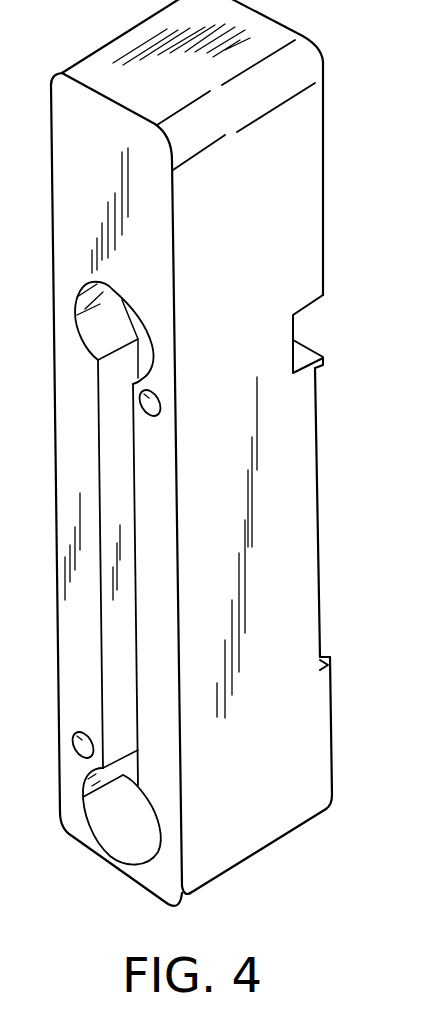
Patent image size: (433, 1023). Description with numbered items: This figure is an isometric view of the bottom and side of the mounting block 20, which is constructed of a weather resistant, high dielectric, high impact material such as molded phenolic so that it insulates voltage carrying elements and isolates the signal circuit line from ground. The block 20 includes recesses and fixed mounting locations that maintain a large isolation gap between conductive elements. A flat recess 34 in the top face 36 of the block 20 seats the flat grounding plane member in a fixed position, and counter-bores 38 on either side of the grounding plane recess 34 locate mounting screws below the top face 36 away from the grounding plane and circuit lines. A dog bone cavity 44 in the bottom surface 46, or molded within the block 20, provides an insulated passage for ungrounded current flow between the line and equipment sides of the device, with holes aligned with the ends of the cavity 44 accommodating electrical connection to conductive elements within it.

The mounting block 20 is at (295, 131).
The bottom surface 46 is at (73, 96).
The dog bone cavity 44 is at (118, 379).
The counter-bores 38 is at (302, 352).
The flat recess 34 is at (316, 527).
The top face 36 is at (330, 763).